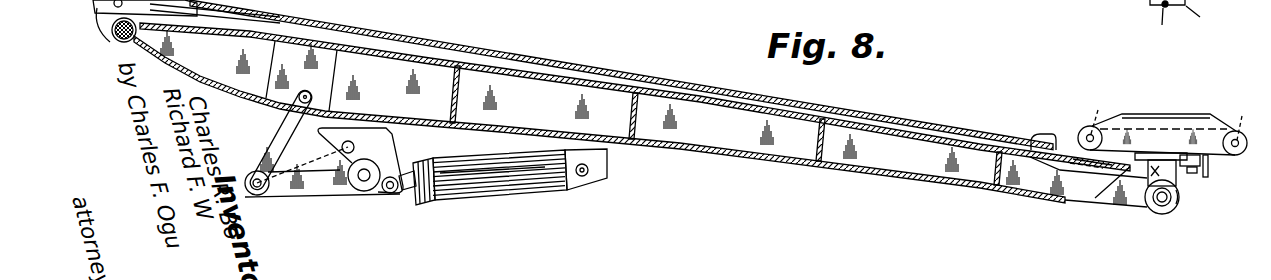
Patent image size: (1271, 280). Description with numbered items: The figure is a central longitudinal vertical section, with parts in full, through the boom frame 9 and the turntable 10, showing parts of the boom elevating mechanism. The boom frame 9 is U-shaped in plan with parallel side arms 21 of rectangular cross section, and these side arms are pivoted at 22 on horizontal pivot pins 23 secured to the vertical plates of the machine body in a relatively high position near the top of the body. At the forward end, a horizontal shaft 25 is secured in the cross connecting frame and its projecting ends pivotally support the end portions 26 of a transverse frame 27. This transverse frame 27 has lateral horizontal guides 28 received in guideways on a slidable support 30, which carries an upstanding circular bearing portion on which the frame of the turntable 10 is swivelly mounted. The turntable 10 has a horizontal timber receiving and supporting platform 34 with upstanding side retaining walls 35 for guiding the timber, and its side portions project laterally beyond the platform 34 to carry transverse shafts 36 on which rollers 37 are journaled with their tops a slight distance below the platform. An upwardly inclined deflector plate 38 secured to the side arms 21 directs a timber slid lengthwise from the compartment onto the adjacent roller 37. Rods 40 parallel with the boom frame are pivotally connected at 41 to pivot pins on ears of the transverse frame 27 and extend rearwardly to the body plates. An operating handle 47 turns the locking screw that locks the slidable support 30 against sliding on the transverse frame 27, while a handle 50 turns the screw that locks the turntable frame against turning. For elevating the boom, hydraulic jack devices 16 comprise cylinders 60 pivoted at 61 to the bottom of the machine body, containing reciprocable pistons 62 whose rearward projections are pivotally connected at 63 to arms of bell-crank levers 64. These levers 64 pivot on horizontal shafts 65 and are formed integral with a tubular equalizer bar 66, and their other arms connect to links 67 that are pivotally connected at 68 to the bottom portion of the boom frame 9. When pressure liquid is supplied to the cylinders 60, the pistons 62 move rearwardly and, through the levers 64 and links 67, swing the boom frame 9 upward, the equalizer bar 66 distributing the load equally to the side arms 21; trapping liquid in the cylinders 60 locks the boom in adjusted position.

The boom frame 9 is at (902, 118).
The turntable 10 is at (1200, 115).
The hydraulic jack device 16 is at (512, 193).
The side arm 21 is at (803, 152).
The pivot 22 is at (113, 36).
The pivot pin 23 is at (124, 43).
The horizontal shaft 25 is at (1160, 199).
The end portion 26 is at (1168, 214).
The transverse frame 27 is at (1150, 180).
The lateral horizontal guide 28 is at (1154, 165).
The slidable support 30 is at (1207, 160).
The timber receiving and supporting platform 34 is at (1135, 123).
The side retaining wall 35 is at (1177, 118).
The transverse shaft 36 is at (1086, 132).
The roller 37 is at (1171, 115).
The deflector plate 38 is at (1033, 133).
The rod 40 is at (930, 133).
The pivotal connection 41 is at (1179, 198).
The operating handle 47 is at (1208, 173).
The handle 50 is at (1194, 174).
The cylinder 60 is at (549, 180).
The cylinder pivot 61 is at (585, 176).
The piston 62 is at (421, 198).
The pivotal connection 63 is at (390, 194).
The bell-crank lever 64 is at (356, 190).
The horizontal shaft 65 is at (360, 146).
The equalizer bar 66 is at (350, 180).
The link 67 is at (277, 127).
The pivotal connection 68 is at (310, 95).